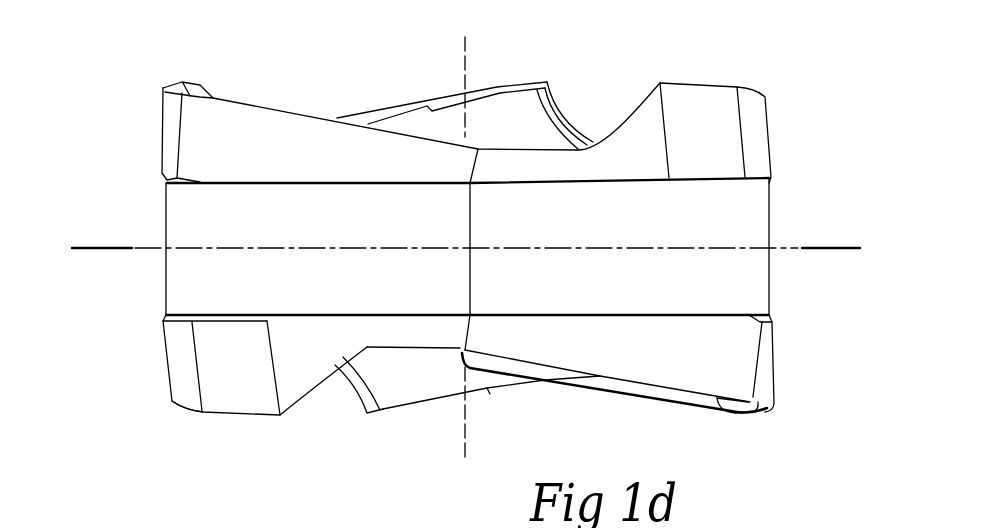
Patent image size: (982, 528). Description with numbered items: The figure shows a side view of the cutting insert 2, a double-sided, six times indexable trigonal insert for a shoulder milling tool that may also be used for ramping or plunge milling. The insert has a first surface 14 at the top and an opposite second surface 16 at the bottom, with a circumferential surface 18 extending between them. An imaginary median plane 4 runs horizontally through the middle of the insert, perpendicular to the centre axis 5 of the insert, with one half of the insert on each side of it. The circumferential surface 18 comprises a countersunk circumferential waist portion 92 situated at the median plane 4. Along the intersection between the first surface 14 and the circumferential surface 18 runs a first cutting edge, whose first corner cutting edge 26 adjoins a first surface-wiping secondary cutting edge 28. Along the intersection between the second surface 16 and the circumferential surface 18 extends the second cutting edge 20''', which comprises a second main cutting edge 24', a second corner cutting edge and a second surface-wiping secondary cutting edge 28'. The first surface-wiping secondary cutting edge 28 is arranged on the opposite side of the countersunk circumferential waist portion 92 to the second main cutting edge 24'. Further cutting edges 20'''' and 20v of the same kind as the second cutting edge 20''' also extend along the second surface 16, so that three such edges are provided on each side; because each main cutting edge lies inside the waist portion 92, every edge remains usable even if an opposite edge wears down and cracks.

The cutting insert 2 is at (140, 64).
The first surface 14 is at (318, 92).
The median plane 4 is at (97, 247).
The first surface-wiping secondary cutting edge 28 is at (702, 98).
The first corner cutting edge 26 is at (738, 100).
The circumferential surface 18 is at (144, 286).
The cutting edge 20'''' is at (147, 445).
The second surface 16 is at (322, 410).
The cutting edge 20v is at (388, 423).
The centre axis 5 is at (465, 434).
The second main cutting edge 24' is at (614, 394).
The countersunk circumferential waist portion 92 is at (669, 294).
The second surface-wiping secondary cutting edge 28' is at (741, 443).
The second cutting edge 20''' is at (805, 403).